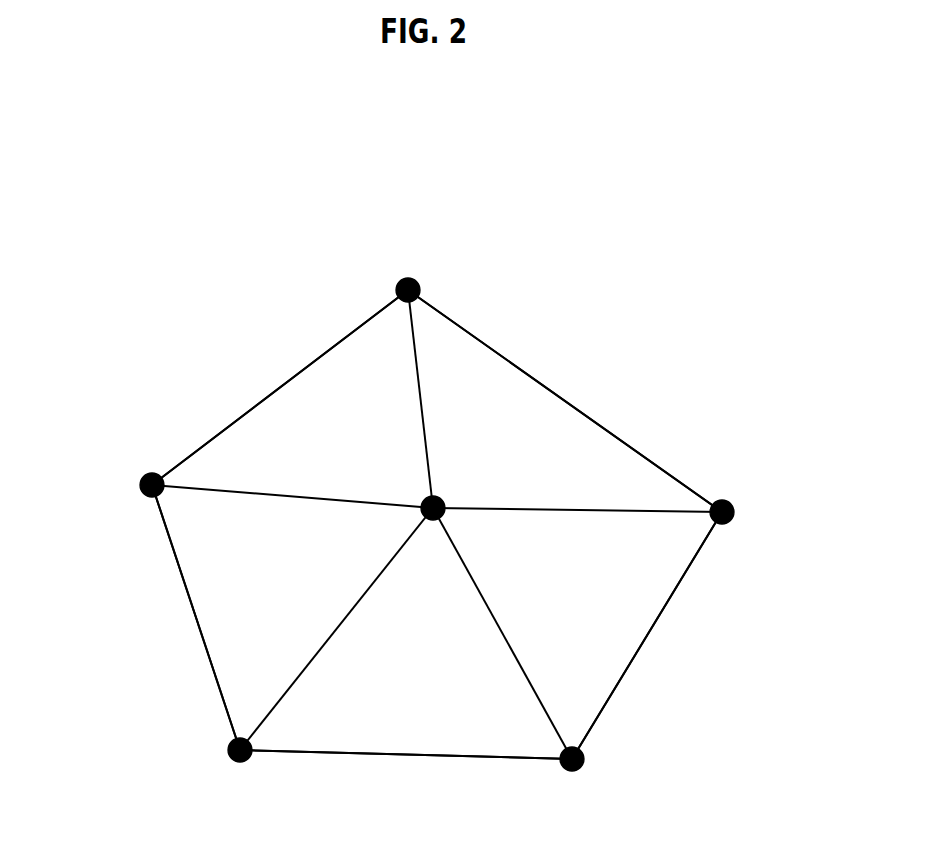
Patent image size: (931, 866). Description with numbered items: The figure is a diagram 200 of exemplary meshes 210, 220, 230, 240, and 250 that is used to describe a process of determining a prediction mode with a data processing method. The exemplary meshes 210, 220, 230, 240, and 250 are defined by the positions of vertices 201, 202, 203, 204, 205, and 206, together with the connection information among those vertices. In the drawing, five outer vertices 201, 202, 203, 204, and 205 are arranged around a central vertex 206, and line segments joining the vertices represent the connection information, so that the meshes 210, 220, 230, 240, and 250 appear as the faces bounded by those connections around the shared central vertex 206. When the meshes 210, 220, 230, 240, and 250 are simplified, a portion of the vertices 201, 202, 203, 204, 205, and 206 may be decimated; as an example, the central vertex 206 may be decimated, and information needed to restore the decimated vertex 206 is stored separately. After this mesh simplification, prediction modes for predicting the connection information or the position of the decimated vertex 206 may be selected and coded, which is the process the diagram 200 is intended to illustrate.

The diagram 200 is at (440, 108).
The vertex 201 is at (401, 278).
The vertex 202 is at (140, 484).
The vertex 203 is at (240, 762).
The vertex 204 is at (575, 771).
The vertex 205 is at (733, 502).
The vertex 206 is at (442, 498).
The exemplary mesh 210 is at (290, 397).
The exemplary mesh 220 is at (208, 612).
The exemplary mesh 230 is at (403, 740).
The exemplary mesh 240 is at (632, 627).
The exemplary mesh 250 is at (507, 380).